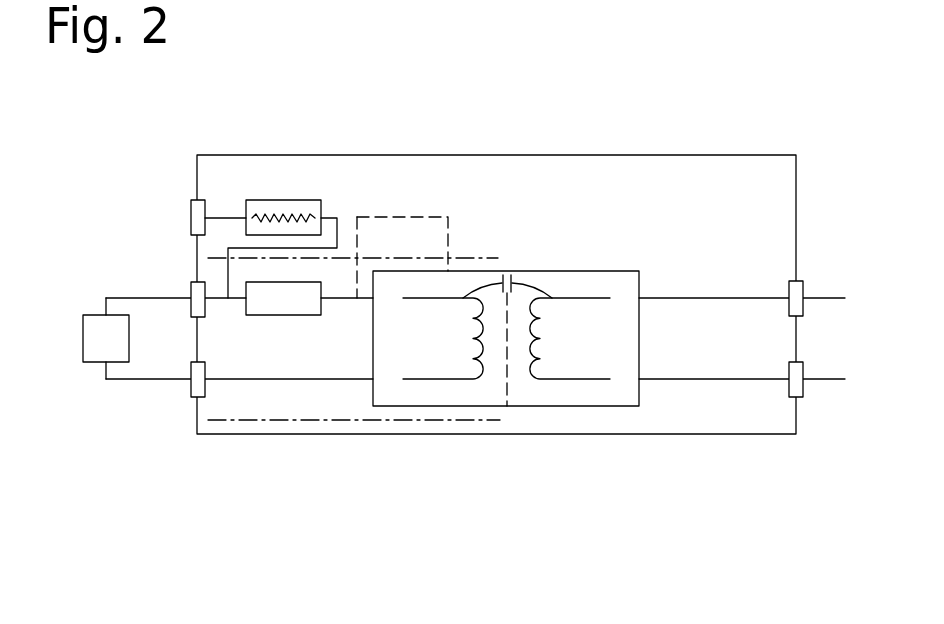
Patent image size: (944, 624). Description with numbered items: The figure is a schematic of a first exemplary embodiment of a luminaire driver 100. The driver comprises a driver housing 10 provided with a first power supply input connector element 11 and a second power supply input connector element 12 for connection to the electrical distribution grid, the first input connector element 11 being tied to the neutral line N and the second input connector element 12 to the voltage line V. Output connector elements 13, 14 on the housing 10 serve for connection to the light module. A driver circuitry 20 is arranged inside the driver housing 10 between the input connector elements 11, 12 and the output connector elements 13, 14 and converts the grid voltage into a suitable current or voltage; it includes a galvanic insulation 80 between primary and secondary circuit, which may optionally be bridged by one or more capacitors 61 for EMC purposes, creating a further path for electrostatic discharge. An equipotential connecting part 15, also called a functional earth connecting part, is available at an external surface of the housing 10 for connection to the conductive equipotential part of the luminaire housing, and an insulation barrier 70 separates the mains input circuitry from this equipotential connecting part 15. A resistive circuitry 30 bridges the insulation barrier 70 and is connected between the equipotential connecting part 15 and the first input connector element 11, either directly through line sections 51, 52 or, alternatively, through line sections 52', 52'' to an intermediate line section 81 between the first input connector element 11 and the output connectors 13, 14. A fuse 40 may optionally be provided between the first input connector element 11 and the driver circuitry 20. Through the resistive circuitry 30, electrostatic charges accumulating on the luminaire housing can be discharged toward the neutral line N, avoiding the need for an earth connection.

The luminaire driver 100 is at (723, 126).
The driver housing 10 is at (477, 157).
The first power supply input connector element 11 is at (194, 305).
The second power supply input connector element 12 is at (192, 388).
The output connector element 13 is at (802, 290).
The output connector element 14 is at (802, 372).
The equipotential connecting part 15 is at (191, 218).
The driver circuitry 20 is at (597, 272).
The resistive circuitry 30 is at (278, 207).
The fuse 40 is at (273, 300).
The line section 51 is at (223, 218).
The line section 52 is at (295, 238).
The line section 52' is at (396, 238).
The line section 52'' is at (440, 234).
The capacitor 61 is at (512, 281).
The insulation barrier 70 is at (210, 258).
The galvanic insulation 80 is at (503, 397).
The intermediate line section 81 is at (340, 300).
The neutral line N is at (153, 298).
The voltage line V is at (153, 379).